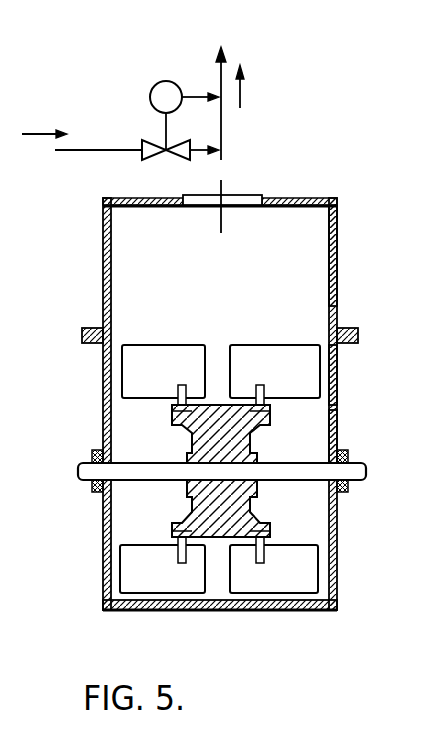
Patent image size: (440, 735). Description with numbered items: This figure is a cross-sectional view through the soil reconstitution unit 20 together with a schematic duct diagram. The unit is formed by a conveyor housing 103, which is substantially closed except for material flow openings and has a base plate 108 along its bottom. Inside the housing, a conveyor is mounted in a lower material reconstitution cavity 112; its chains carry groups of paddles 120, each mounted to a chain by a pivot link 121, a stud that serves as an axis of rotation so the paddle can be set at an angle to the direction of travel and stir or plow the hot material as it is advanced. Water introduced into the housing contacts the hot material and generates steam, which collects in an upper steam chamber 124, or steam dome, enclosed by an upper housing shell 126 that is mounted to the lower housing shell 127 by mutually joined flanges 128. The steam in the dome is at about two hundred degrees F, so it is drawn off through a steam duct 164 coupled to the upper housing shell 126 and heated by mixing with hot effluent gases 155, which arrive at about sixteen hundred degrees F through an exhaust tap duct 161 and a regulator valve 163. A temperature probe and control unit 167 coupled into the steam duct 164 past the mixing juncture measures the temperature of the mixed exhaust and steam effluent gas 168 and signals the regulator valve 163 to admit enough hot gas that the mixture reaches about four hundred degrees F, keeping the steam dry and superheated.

The soil reconstitution unit 20 is at (312, 185).
The conveyor housing 103 is at (350, 288).
The base plate 108 is at (286, 611).
The lower material reconstitution cavity 112 is at (322, 440).
The paddles 120 is at (132, 380).
The pivot link 121 is at (183, 572).
The upper steam chamber 124 is at (320, 250).
The upper housing shell 126 is at (334, 200).
The lower housing shell 127 is at (340, 372).
The flanges 128 is at (88, 327).
The hot effluent gases 155 is at (42, 134).
The exhaust tap duct 161 is at (79, 152).
The regulator valve 163 is at (152, 160).
The steam duct 164 is at (220, 175).
The temperature probe and control unit 167 is at (157, 85).
The mixed exhaust and steam effluent gas 168 is at (240, 103).